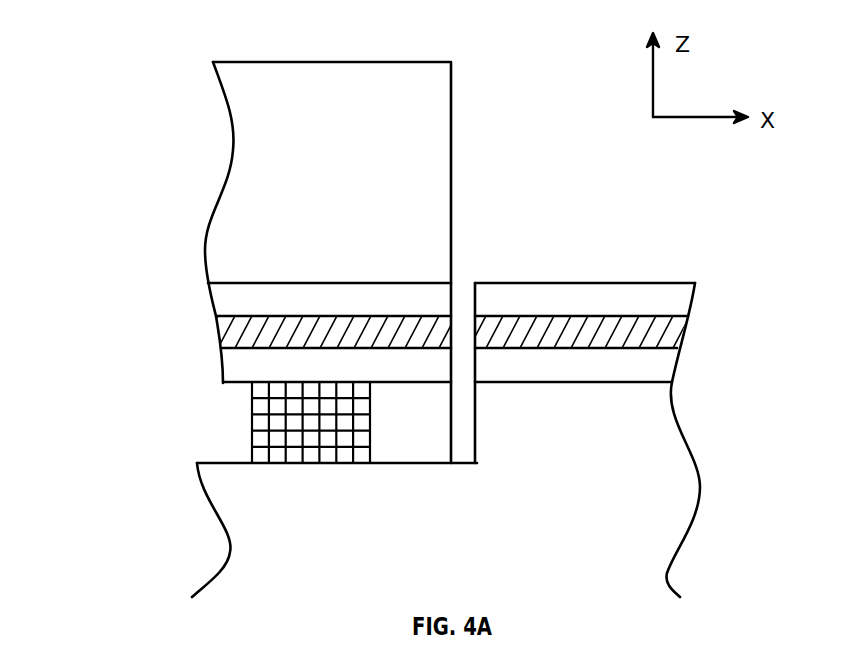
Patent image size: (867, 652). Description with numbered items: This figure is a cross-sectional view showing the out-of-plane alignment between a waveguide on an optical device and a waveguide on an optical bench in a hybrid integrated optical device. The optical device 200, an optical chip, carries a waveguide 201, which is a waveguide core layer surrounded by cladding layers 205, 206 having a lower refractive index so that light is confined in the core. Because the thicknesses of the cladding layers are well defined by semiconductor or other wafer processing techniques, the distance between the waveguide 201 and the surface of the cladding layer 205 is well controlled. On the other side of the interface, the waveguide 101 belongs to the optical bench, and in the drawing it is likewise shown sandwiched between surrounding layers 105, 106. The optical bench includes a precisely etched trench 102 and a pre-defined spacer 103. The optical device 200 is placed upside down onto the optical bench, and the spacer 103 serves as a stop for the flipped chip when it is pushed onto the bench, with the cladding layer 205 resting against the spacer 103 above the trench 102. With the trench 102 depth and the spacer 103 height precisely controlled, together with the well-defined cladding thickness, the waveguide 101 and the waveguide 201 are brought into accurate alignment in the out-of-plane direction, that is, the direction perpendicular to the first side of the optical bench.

The optical device 200 is at (452, 165).
The cladding layer 206 is at (230, 307).
The waveguide 201 is at (235, 337).
The cladding layer 205 is at (243, 373).
The spacer 103 is at (295, 428).
The trench 102 is at (223, 468).
The upper layer of base 105 is at (502, 298).
The waveguide 101 is at (540, 338).
The lower layer of base 106 is at (577, 372).